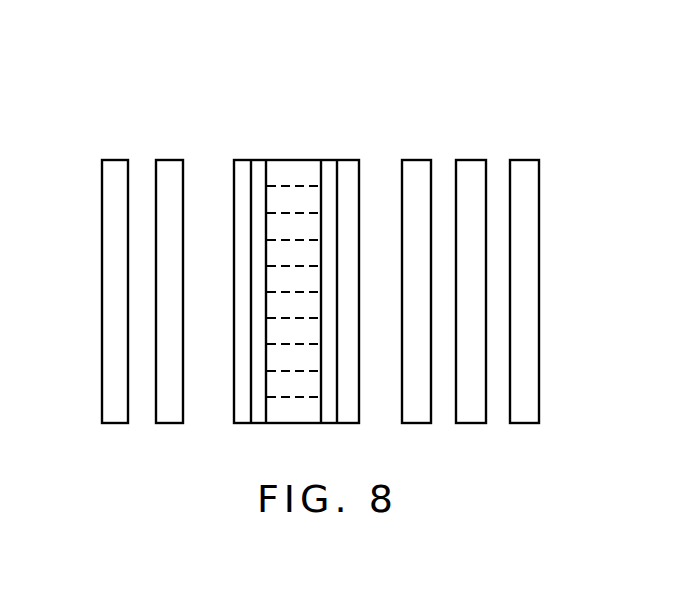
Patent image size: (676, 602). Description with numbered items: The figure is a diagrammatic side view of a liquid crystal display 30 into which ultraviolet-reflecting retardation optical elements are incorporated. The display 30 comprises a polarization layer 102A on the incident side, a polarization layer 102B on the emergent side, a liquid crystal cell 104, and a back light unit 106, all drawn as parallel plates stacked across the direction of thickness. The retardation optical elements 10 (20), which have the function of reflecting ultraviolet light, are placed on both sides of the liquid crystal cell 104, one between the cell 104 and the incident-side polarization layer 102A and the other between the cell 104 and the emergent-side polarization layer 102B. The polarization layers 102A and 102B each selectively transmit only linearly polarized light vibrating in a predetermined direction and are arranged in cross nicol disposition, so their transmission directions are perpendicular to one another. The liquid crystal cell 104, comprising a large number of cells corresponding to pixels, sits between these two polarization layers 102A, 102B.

The liquid crystal display 30 is at (342, 82).
The liquid crystal cell 104 is at (288, 160).
The polarization layer on the emergent side 102B is at (112, 160).
The retardation optical element 10 is at (293, 260).
The retardation optical element 20 is at (168, 160).
The polarization layer on the incident side 102A is at (467, 160).
The back light unit 106 is at (529, 160).